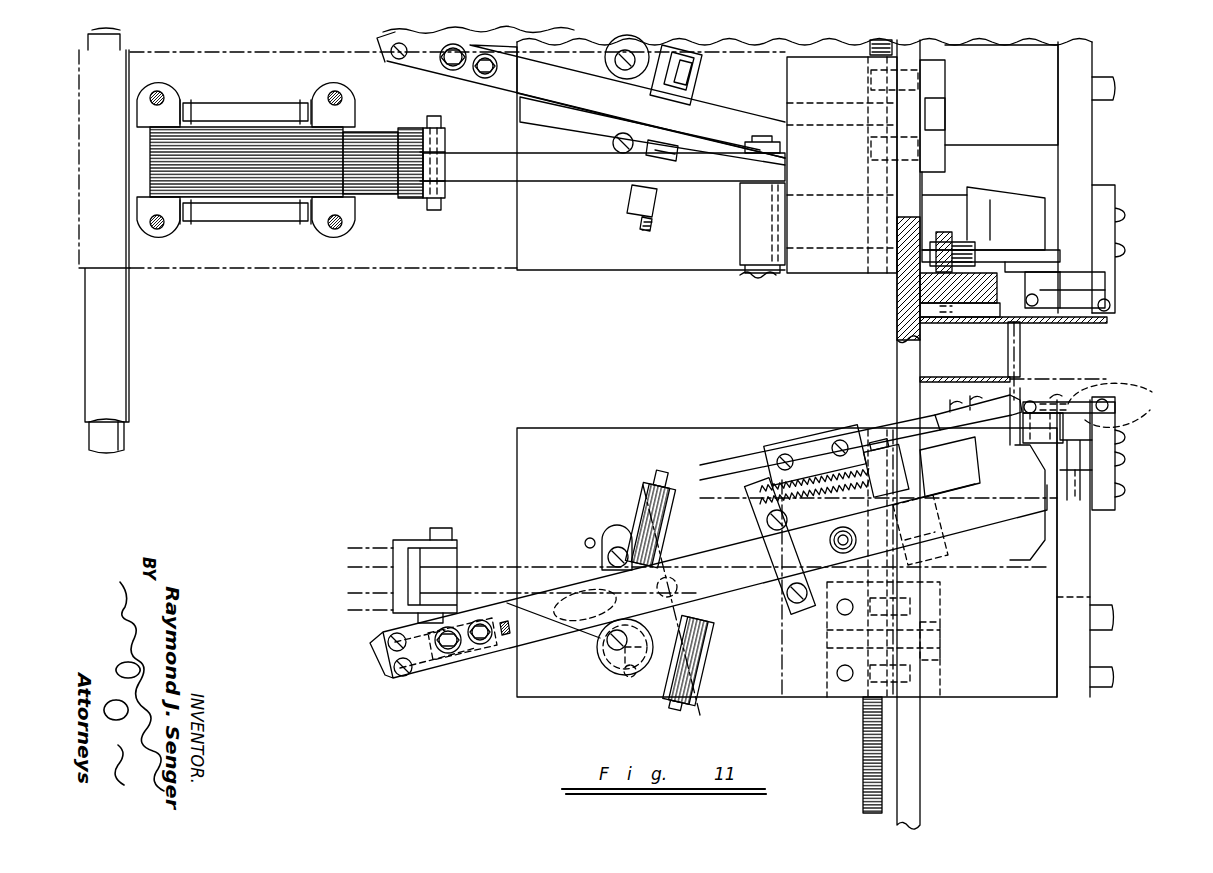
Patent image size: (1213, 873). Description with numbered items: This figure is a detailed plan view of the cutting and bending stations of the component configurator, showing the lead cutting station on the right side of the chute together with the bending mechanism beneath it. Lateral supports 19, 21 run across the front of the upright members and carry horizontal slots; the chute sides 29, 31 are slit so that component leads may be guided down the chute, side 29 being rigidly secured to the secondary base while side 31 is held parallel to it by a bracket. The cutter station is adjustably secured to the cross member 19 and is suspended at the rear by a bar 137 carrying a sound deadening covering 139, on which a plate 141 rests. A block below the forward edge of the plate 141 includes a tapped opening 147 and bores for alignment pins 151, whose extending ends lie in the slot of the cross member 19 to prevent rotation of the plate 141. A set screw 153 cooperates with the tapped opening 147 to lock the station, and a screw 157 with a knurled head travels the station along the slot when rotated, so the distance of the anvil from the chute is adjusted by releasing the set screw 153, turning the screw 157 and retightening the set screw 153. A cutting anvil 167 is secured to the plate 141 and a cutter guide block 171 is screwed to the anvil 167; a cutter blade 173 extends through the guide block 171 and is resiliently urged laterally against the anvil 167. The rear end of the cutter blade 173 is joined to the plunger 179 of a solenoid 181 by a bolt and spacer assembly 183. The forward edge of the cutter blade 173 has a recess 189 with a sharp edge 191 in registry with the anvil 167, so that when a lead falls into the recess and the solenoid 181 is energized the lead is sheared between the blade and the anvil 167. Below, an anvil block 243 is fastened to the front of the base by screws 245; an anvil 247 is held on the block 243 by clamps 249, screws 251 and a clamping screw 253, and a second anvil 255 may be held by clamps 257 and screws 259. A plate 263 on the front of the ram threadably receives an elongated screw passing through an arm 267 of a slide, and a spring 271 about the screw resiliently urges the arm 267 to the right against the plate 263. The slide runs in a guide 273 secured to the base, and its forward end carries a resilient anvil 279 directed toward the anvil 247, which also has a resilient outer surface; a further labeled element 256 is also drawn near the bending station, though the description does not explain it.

The lateral support 19 is at (897, 307).
The lateral support 21 is at (920, 744).
The chute side 29 is at (1002, 374).
The chute side 31 is at (1013, 323).
The bar 137 is at (124, 440).
The sound deadening covering 139 is at (128, 362).
The plate 141 is at (480, 275).
The tapped opening 147 is at (795, 105).
The alignment pins 151 is at (922, 72).
The set screw 153 is at (946, 112).
The screw 157 is at (870, 54).
The cutting anvil 167 is at (1005, 323).
The cutter guide block 171 is at (945, 196).
The cutter blade 173 is at (985, 250).
The plunger 179 is at (560, 182).
The solenoid 181 is at (270, 217).
The bolt and spacer assembly 183 is at (740, 228).
The recess 189 is at (1012, 257).
The sharp edge 191 is at (1060, 272).
The anvil block 243 is at (1092, 562).
The screws 245 is at (1112, 677).
The anvil 247 is at (1032, 402).
The clamps 249 is at (1024, 410).
The screws 251 is at (1118, 407).
The clamping screw 253 is at (1054, 400).
The second anvil 255 is at (1115, 392).
The bracket 256 is at (760, 523).
The clamps 257 is at (1118, 440).
The screws 259 is at (1118, 490).
The plate 263 is at (912, 488).
The arm 267 is at (866, 462).
The spring 271 is at (830, 502).
The guide 273 is at (789, 446).
The anvil 279 is at (953, 418).